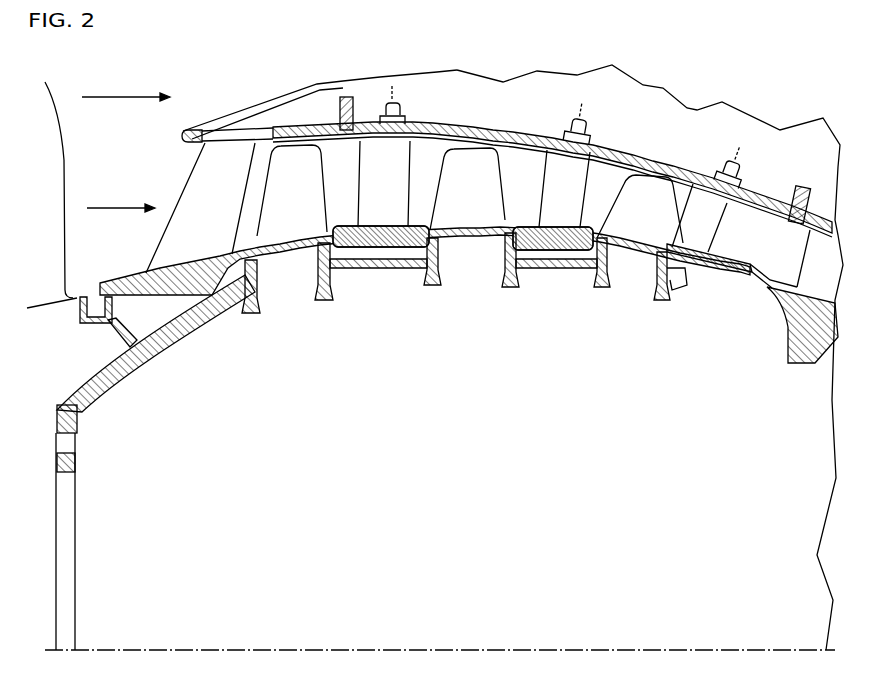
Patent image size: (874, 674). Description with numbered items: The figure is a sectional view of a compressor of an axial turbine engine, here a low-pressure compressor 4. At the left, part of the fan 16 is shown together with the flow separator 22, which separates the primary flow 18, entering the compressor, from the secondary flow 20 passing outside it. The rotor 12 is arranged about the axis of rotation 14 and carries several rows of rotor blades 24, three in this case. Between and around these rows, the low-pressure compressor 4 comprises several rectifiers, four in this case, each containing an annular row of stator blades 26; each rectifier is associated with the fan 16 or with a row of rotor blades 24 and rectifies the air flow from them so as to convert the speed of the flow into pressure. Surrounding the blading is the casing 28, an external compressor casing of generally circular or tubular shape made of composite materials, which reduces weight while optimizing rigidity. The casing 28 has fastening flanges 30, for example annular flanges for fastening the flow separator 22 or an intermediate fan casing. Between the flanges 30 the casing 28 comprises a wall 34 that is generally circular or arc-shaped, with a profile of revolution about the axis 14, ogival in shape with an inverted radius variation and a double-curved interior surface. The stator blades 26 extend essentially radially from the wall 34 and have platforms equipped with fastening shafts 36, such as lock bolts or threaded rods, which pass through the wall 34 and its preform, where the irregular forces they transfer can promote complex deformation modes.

The low-pressure compressor 4 is at (725, 81).
The rotor 12 is at (77, 433).
The axis of rotation 14 is at (551, 650).
The fan 16 is at (54, 203).
The primary flow 18 is at (121, 194).
The secondary flow 20 is at (126, 83).
The flow separator 22 is at (182, 138).
The rotor blades 24 is at (306, 194).
The stator blades 26 is at (218, 210).
The casing 28 is at (639, 125).
The fastening flanges 30 is at (347, 96).
The wall 34 is at (501, 129).
The fastening shafts 36 is at (403, 108).